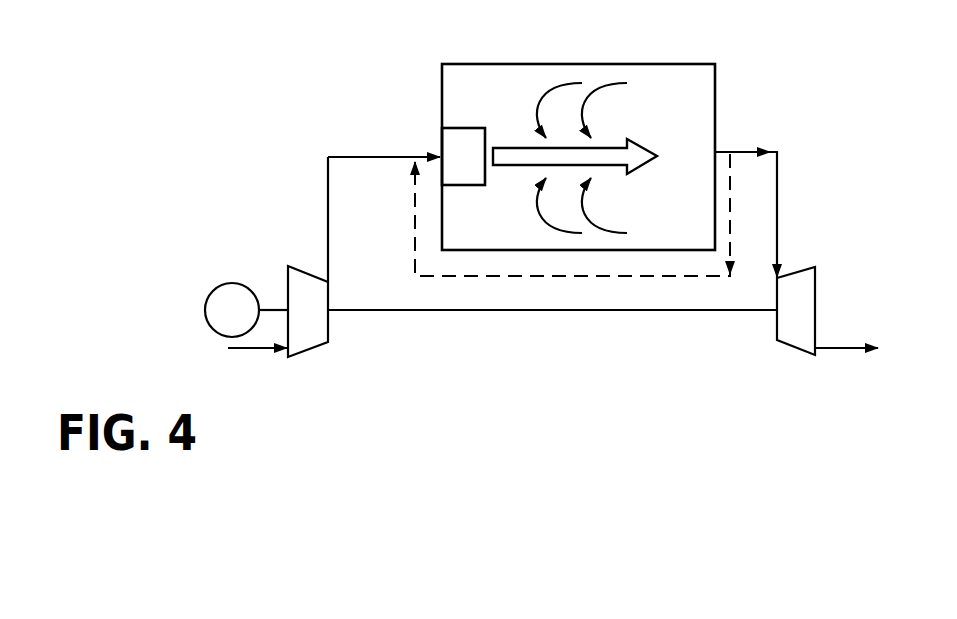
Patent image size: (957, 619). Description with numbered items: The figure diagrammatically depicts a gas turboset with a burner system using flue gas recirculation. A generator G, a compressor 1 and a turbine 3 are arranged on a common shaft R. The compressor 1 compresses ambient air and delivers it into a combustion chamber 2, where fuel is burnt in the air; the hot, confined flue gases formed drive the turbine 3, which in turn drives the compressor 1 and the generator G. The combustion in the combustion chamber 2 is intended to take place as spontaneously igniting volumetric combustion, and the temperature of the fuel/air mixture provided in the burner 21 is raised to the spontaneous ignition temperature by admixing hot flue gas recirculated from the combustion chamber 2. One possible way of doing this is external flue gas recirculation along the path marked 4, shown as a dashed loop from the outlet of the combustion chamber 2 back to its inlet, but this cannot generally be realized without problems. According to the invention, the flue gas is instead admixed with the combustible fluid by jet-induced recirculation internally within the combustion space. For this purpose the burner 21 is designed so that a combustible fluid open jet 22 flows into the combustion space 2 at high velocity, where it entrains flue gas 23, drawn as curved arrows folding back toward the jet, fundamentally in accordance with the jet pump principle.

The combustion chamber 2 is at (713, 78).
The burner 21 is at (457, 139).
The combustible fluid open jet 22 is at (605, 147).
The flue gas 23 is at (578, 112).
The compressor 1 is at (320, 327).
The turbine 3 is at (811, 326).
The external flue gas recirculation path 4 is at (620, 276).
The common shaft R is at (494, 310).
The generator G is at (245, 327).